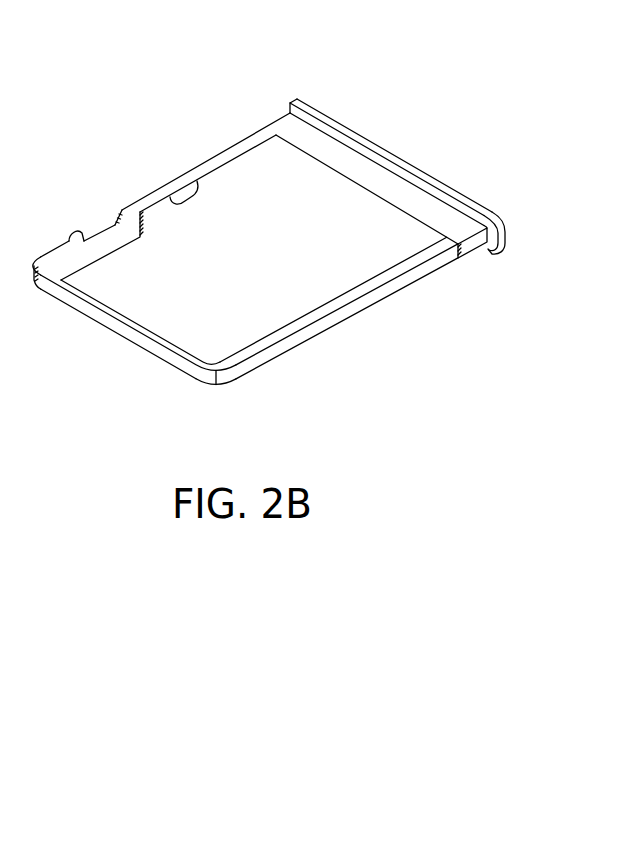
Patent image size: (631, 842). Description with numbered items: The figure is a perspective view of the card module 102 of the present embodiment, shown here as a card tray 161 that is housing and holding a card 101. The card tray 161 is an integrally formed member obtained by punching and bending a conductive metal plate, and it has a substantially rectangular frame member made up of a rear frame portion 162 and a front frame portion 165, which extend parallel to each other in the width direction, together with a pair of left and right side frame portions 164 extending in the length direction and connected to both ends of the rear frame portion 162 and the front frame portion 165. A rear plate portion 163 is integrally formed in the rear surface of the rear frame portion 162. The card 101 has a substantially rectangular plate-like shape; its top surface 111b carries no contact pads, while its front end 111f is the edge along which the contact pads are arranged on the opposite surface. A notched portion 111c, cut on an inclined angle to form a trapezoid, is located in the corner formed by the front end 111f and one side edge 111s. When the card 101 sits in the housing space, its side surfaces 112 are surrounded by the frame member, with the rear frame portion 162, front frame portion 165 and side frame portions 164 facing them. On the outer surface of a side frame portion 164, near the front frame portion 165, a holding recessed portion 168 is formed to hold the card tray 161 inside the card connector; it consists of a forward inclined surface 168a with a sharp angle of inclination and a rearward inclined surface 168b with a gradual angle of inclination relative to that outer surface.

The card 101 is at (360, 298).
The card module 102 is at (380, 105).
The top surface 111b is at (380, 253).
The notched portion 111c is at (142, 238).
The front end 111f is at (157, 330).
The side edge 111s is at (304, 318).
The side surfaces 112 is at (225, 169).
The card tray 161 is at (463, 268).
The rear frame portion 162 is at (430, 204).
The rear plate portion 163 is at (494, 212).
The side frame portion 164 is at (328, 330).
The front frame portion 165 is at (143, 343).
The holding recessed portion 168 is at (97, 228).
The forward inclined surface 168a is at (72, 232).
The rearward inclined surface 168b is at (116, 214).